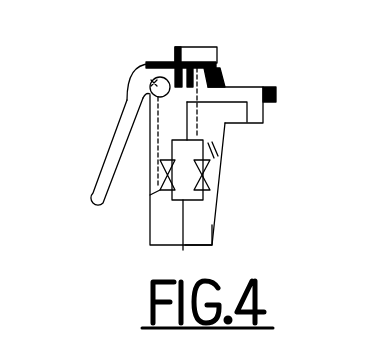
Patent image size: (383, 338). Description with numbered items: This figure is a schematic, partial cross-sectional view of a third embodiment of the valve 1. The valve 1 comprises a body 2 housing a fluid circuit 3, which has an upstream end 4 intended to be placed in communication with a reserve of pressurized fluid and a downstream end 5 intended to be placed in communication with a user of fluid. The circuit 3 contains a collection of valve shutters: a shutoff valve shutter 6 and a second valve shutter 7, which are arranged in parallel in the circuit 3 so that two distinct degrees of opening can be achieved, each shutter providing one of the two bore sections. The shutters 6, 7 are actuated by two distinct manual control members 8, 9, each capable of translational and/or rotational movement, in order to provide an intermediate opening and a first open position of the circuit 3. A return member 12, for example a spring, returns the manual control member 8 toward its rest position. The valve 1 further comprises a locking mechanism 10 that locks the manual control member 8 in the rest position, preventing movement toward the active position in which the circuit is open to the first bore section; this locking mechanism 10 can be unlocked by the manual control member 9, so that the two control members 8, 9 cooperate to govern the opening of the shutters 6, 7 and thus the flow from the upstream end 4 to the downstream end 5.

The valve 1 is at (124, 70).
The body 2 is at (212, 225).
The fluid circuit 3 is at (251, 132).
The upstream end 4 is at (183, 249).
The downstream end 5 is at (276, 93).
The shutoff valve shutter 6 is at (148, 207).
The valve shutter 7 is at (217, 179).
The manual control member 8 is at (114, 152).
The manual control member 9 is at (201, 46).
The locking mechanism 10 is at (181, 46).
The return member 12 is at (226, 73).